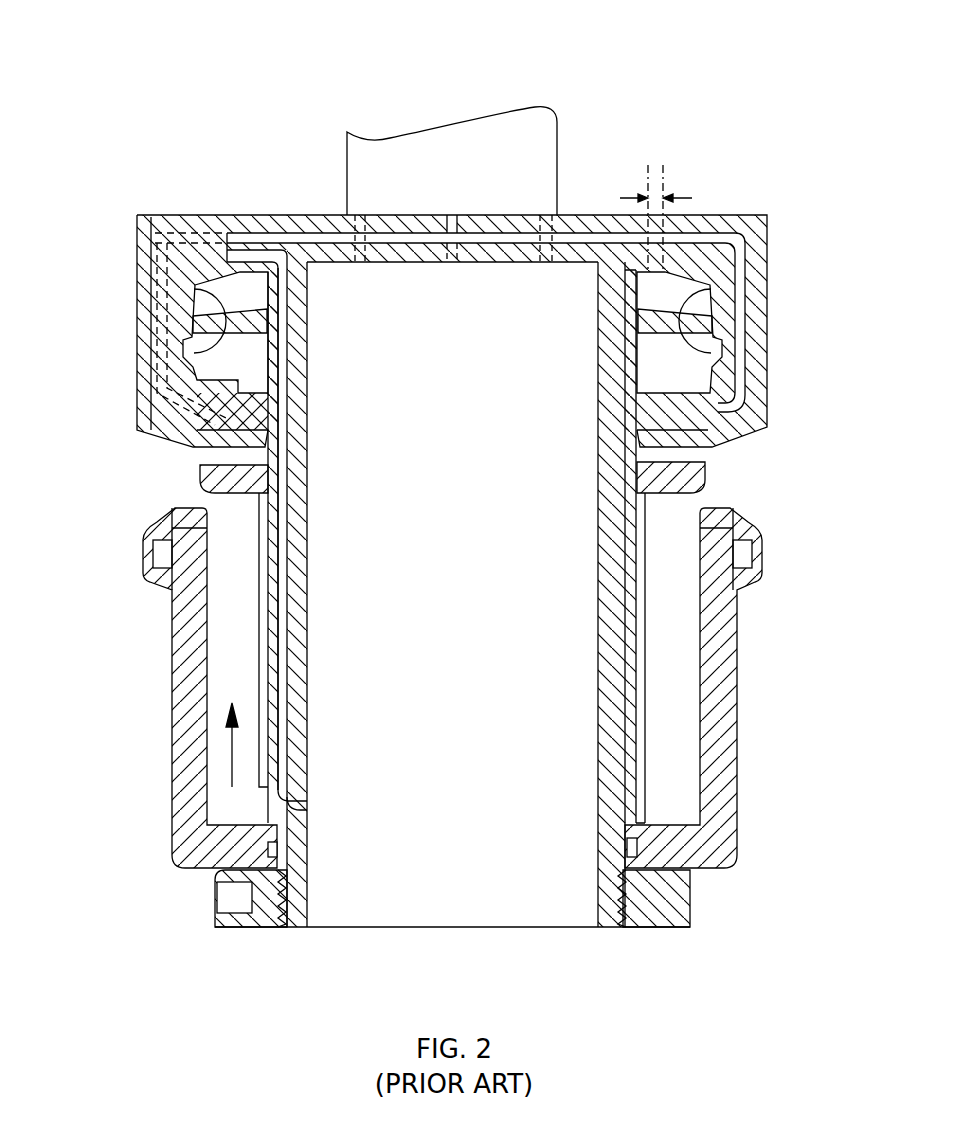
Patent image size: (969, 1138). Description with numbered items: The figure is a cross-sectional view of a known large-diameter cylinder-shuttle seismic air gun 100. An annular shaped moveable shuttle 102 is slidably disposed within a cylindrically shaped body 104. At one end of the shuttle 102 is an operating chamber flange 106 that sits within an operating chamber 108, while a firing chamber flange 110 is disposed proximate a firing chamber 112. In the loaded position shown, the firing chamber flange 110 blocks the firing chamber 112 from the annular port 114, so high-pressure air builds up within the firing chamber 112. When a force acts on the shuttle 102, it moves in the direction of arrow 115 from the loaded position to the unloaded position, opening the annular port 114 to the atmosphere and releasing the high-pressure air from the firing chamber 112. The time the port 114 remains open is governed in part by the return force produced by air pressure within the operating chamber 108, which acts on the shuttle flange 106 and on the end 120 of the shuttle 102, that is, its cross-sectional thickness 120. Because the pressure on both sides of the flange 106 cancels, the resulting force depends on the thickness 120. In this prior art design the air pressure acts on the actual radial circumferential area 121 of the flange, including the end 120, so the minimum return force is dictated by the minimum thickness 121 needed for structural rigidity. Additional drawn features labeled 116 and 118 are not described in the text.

The large-diameter cylinder-shuttle seismic air gun 100 is at (753, 80).
The shuttle 102 is at (262, 690).
The body 104 is at (770, 352).
The operating chamber flange 106 is at (193, 360).
The operating chamber 108 is at (222, 297).
The firing chamber flange 110 is at (200, 471).
The firing chamber 112 is at (228, 650).
The annular port 114 is at (128, 510).
The arrow 115 is at (232, 790).
The retaining ring 116 is at (700, 296).
The seal ring 118 is at (708, 353).
The end of the shuttle 120 is at (643, 297).
The radial circumferential area of the flange 121 is at (692, 198).